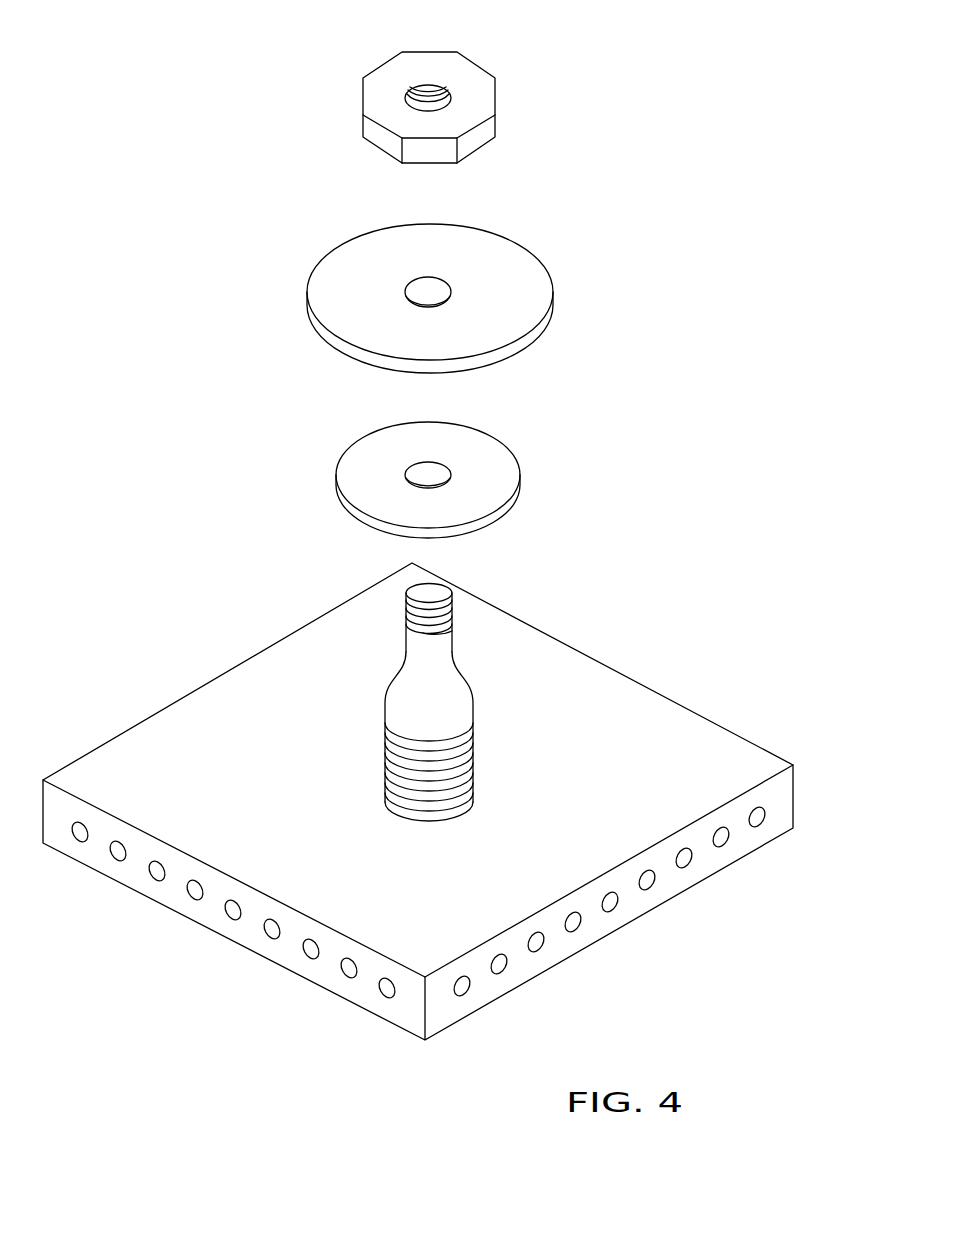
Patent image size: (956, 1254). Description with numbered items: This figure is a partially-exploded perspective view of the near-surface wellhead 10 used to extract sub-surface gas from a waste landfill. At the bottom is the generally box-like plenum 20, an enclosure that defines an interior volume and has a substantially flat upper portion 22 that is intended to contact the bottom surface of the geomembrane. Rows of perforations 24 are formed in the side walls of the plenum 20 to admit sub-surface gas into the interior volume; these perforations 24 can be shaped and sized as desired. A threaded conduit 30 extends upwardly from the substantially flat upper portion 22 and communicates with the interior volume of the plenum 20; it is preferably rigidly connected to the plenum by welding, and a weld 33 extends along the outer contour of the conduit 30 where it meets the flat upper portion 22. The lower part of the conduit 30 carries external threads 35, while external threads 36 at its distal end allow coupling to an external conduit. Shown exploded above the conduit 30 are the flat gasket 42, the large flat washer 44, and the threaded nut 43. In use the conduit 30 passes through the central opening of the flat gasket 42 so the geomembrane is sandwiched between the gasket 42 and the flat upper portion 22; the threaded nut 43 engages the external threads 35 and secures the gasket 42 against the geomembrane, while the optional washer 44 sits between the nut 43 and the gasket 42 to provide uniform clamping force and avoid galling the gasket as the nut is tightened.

The wellhead 10 is at (251, 193).
The plenum 20 is at (434, 813).
The substantially flat upper portion 22 is at (224, 779).
The perforations 24 is at (763, 820).
The threaded conduit 30 is at (445, 709).
The weld 33 is at (468, 808).
The external threads 35 is at (385, 750).
The external threads 36 is at (405, 643).
The flat gasket 42 is at (492, 455).
The threaded nut 43 is at (483, 80).
The large flat washer 44 is at (537, 277).